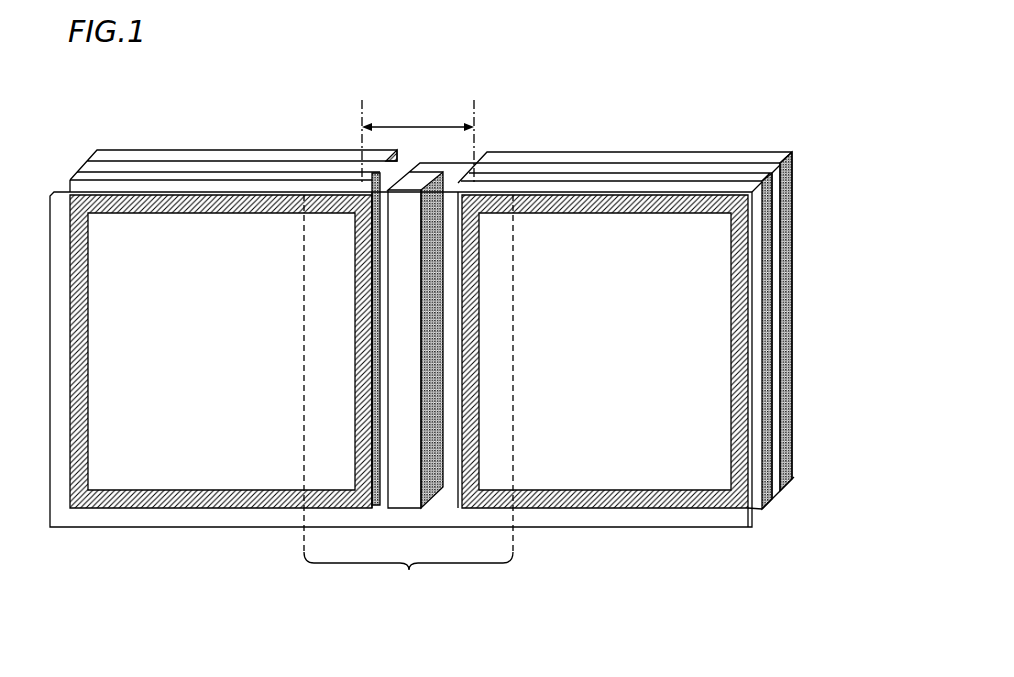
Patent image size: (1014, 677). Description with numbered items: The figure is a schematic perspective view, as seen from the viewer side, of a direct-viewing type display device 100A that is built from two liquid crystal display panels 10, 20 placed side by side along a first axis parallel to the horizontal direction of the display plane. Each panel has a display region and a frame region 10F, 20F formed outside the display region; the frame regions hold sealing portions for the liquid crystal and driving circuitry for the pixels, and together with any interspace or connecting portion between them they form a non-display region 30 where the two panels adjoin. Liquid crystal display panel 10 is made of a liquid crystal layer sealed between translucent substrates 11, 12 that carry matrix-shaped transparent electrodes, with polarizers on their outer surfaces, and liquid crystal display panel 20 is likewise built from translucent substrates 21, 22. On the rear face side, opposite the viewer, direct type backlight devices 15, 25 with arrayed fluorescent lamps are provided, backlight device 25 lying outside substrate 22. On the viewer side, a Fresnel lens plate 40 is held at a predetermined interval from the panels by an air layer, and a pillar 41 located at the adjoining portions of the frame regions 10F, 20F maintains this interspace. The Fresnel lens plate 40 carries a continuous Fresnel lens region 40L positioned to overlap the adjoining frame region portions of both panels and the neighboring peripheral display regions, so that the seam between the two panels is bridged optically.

The display device 100A is at (730, 88).
The liquid crystal display panel 10 is at (626, 138).
The liquid crystal display panel 20 is at (252, 139).
The non-display region 30 is at (418, 141).
The translucent substrate 11 is at (760, 205).
The translucent substrate 12 is at (762, 168).
The backlight device 15 is at (738, 157).
The translucent substrate 21 is at (70, 180).
The translucent substrate 22 is at (88, 160).
The backlight device 25 is at (148, 157).
The frame region 10F is at (668, 510).
The frame region 20F is at (183, 509).
The Fresnel lens plate 40 is at (547, 517).
The pillar 41 is at (437, 488).
The Fresnel lens region 40L is at (408, 396).